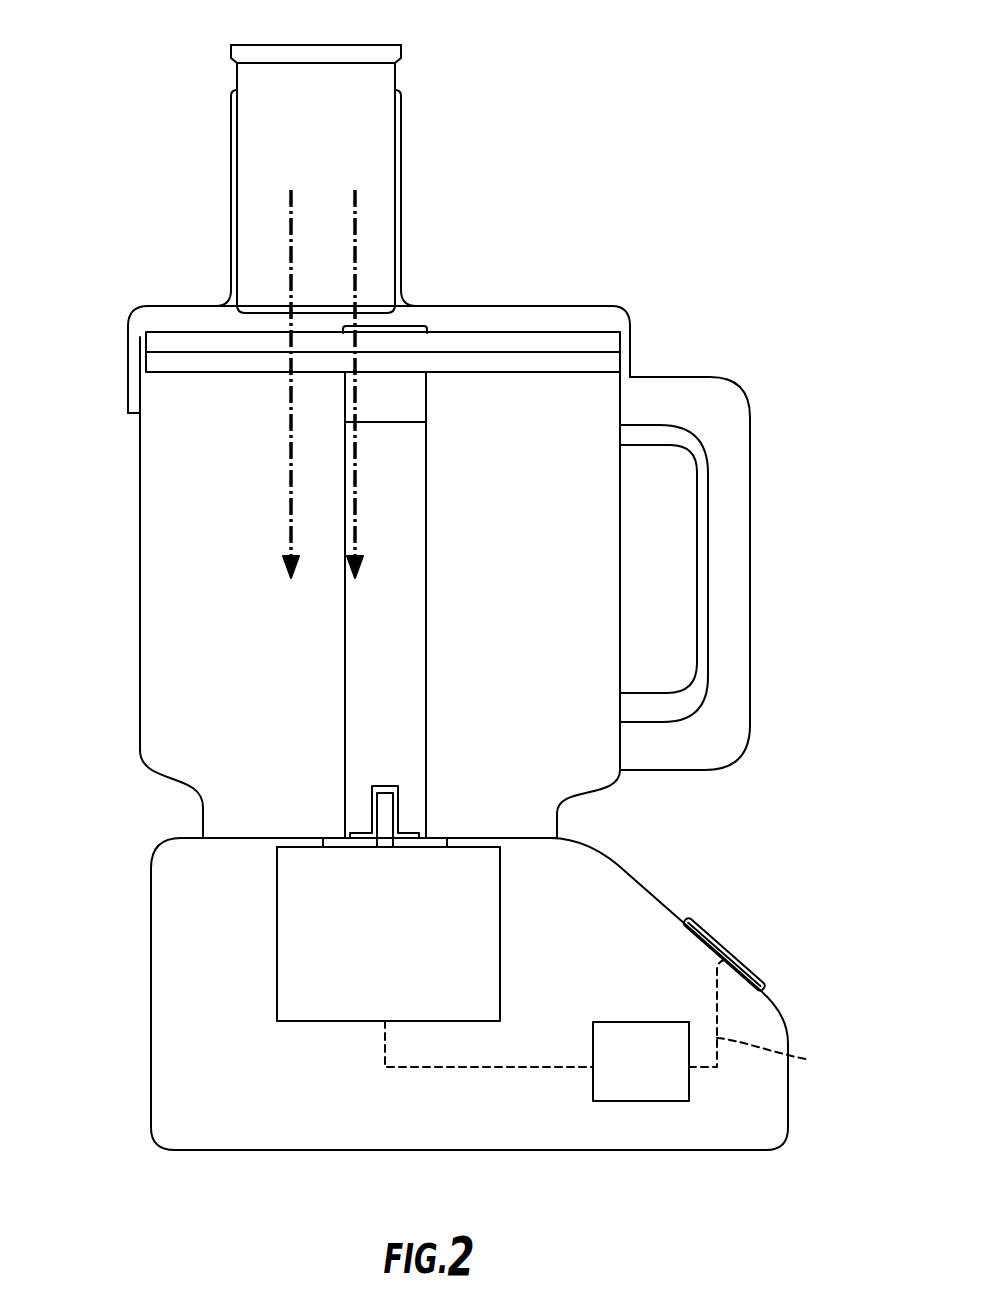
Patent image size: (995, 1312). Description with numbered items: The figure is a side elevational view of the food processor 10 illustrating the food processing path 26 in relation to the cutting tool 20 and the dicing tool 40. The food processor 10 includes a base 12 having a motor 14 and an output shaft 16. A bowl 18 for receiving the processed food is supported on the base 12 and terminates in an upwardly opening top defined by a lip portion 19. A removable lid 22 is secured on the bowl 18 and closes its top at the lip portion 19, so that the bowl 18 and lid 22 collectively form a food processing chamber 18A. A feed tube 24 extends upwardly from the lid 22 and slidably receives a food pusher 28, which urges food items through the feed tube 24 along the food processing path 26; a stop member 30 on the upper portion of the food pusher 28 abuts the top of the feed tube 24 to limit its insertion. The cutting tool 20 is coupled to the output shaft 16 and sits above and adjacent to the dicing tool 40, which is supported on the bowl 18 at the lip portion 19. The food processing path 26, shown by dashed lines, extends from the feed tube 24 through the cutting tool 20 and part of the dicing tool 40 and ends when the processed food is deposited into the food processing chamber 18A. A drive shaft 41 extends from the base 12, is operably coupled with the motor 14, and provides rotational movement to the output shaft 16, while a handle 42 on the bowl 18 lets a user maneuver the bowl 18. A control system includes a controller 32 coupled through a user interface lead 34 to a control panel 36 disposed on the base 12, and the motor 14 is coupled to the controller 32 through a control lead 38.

The food processor 10 is at (142, 92).
The base 12 is at (152, 872).
The motor 14 is at (289, 947).
The output shaft 16 is at (343, 621).
The bowl 18 is at (621, 568).
The food processing chamber 18A is at (153, 540).
The lip portion 19 is at (127, 355).
The cutting tool 20 is at (613, 342).
The lid 22 is at (524, 306).
The feed tube 24 is at (230, 172).
The food processing path 26 is at (291, 243).
The food pusher 28 is at (260, 222).
The stop member 30 is at (396, 44).
The controller 32 is at (637, 1101).
The user interface lead 34 is at (778, 1058).
The control panel 36 is at (738, 958).
The control lead 38 is at (478, 1067).
The dicing tool 40 is at (613, 363).
The drive shaft 41 is at (381, 798).
The handle 42 is at (750, 630).